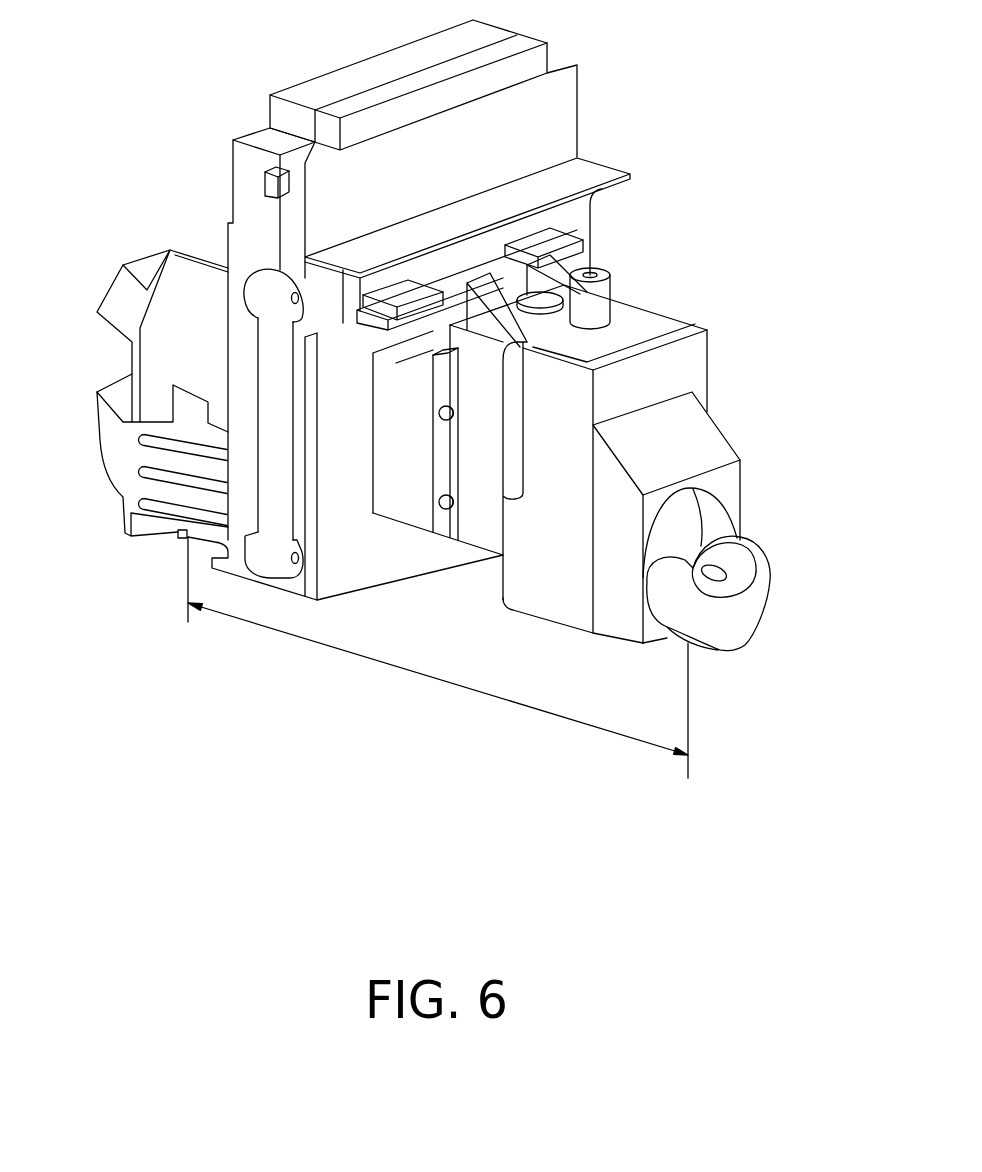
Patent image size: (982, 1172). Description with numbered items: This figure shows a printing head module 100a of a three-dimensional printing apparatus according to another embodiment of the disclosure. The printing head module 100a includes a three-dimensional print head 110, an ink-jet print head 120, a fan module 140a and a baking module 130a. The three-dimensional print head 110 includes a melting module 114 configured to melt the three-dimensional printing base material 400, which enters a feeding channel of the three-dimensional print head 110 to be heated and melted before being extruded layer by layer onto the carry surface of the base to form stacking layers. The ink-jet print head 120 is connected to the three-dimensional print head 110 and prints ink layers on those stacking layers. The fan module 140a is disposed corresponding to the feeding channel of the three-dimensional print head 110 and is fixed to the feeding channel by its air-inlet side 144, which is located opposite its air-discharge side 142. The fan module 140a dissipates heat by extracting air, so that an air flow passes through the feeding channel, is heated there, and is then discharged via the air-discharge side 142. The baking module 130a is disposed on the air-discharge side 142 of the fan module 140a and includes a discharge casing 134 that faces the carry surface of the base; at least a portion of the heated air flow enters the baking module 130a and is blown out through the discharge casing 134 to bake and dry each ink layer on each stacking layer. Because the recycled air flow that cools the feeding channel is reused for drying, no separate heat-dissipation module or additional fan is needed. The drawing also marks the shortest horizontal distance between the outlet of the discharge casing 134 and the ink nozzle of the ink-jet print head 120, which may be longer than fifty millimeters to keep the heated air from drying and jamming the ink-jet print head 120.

The printing head module 100a is at (461, 433).
The 3-D print head 110 is at (609, 464).
The melting module 114 is at (640, 330).
The ink-jet print head 120 is at (152, 322).
The baking module 130a is at (766, 623).
The discharge casing 134 is at (703, 647).
The fan module 140a is at (722, 509).
The air-discharge side 142 is at (713, 517).
The air-inlet side 144 is at (663, 398).
The 3-D printing base material 400 is at (595, 300).